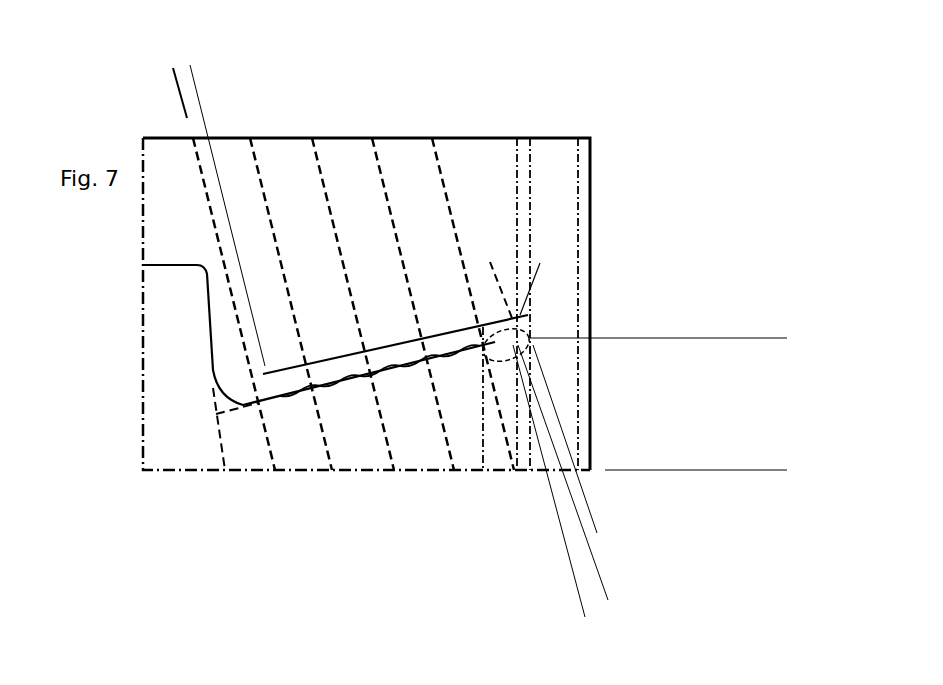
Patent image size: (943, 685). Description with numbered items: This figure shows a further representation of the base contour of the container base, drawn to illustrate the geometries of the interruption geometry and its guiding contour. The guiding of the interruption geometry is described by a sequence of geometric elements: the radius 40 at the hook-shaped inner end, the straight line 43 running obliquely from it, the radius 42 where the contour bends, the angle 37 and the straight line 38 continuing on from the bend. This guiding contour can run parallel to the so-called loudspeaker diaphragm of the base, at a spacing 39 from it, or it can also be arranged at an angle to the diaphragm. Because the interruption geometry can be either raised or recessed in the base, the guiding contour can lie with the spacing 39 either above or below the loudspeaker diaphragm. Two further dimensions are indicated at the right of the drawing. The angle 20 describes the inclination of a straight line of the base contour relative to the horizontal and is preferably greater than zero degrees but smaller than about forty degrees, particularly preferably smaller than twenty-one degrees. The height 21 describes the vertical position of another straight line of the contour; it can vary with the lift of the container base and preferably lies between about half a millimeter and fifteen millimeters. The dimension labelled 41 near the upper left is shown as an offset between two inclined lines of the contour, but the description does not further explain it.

The angle 20 is at (649, 306).
The height 21 is at (772, 338).
The angle 37 is at (597, 530).
The straight line 38 is at (582, 528).
The spacing 39 is at (423, 473).
The radius 40 is at (283, 257).
The offset between hatching planes 41 is at (293, 52).
The radius 42 is at (430, 262).
The straight line 43 is at (428, 330).